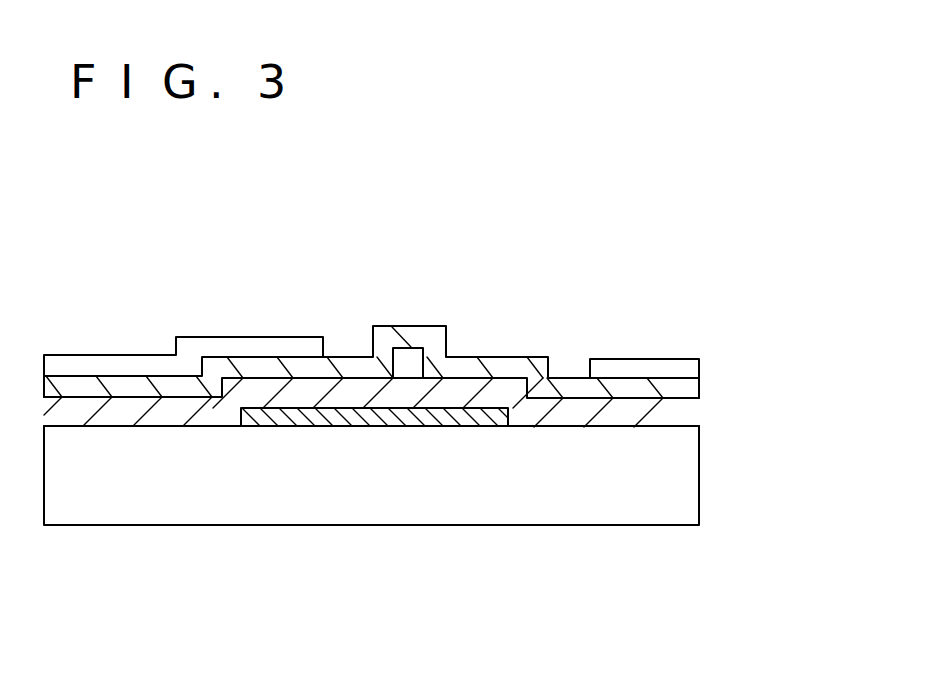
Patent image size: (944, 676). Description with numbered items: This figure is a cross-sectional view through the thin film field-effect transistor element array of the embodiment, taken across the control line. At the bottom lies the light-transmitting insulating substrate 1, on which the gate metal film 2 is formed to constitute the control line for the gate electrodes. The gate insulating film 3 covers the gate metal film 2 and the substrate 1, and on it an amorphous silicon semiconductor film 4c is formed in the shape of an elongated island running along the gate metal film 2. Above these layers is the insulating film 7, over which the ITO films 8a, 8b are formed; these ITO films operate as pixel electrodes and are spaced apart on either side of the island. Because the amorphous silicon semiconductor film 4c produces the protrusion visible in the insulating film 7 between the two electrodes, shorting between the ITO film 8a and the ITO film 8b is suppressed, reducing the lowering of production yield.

The light-transmitting insulating substrate 1 is at (79, 498).
The gate metal film 2 is at (393, 423).
The gate insulating film 3 is at (690, 423).
The amorphous silicon semiconductor film 4c is at (410, 358).
The insulating film 7 is at (699, 388).
The ITO film 8a is at (648, 371).
The ITO film 8b is at (110, 363).